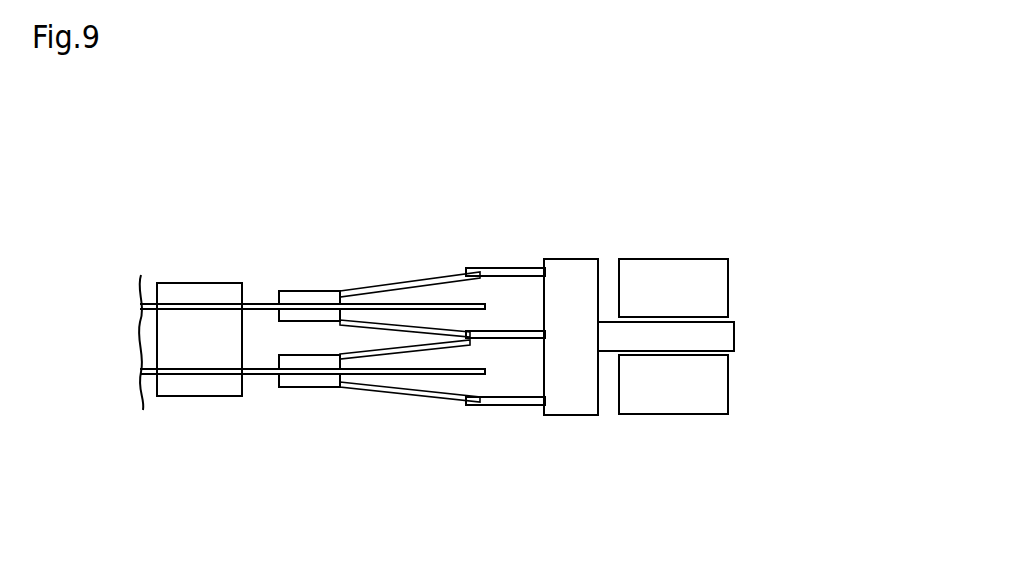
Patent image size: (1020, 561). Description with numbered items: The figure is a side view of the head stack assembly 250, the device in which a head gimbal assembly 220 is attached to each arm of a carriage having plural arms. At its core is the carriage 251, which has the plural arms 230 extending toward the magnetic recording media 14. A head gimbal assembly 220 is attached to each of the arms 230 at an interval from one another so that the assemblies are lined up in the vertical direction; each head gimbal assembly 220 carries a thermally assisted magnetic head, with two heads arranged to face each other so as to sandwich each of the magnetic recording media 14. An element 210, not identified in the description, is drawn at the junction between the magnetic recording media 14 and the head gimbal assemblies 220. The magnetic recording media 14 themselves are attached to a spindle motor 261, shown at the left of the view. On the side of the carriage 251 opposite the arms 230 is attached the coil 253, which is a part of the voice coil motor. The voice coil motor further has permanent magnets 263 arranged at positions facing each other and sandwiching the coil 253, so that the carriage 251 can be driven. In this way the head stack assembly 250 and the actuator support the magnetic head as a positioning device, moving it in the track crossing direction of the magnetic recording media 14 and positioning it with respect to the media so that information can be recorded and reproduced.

The magnetic recording media 14 is at (255, 301).
The sleeve 210 is at (277, 297).
The head gimbal assembly 220 is at (397, 283).
The arms 230 is at (482, 268).
The head stack assembly 250 is at (585, 338).
The carriage 251 is at (573, 408).
The coil 253 is at (724, 338).
The spindle motor 261 is at (180, 290).
The permanent magnets 263 is at (668, 259).